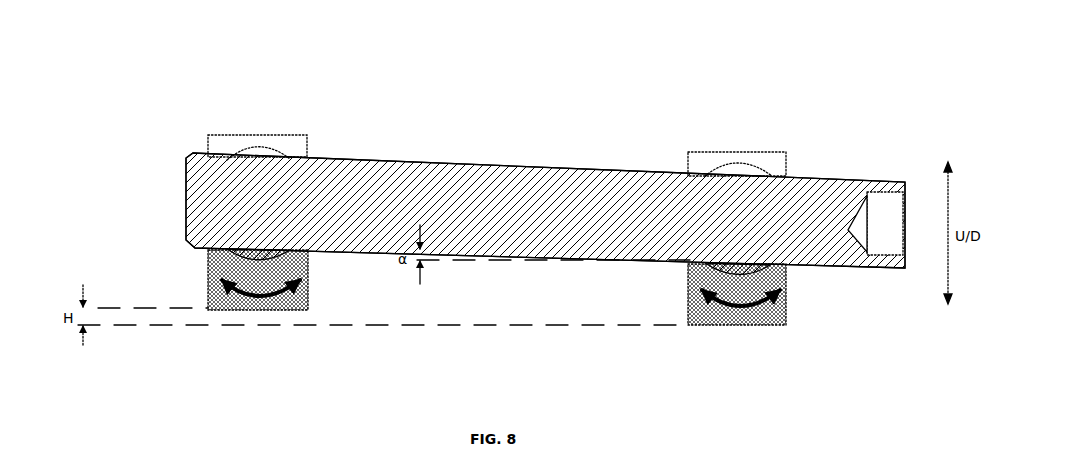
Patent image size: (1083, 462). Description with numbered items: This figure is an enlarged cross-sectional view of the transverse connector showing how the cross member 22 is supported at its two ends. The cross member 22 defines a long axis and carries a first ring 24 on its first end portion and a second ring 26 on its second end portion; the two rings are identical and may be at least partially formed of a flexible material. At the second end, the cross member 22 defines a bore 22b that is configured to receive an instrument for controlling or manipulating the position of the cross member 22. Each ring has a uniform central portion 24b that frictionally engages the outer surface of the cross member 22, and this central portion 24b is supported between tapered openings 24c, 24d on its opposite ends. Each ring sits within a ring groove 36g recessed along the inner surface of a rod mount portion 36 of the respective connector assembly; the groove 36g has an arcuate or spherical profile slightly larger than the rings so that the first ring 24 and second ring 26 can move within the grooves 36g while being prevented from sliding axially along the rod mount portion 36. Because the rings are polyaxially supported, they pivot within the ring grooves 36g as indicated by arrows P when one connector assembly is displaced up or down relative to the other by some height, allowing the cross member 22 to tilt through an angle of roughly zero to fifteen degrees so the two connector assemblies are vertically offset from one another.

The cross member 22 is at (398, 165).
The bore 22b is at (891, 217).
The first ring 24 is at (735, 170).
The uniform central portion 24b is at (262, 158).
The tapered opening 24c is at (291, 158).
The tapered opening 24d is at (233, 158).
The second ring 26 is at (262, 158).
The rod mount portion 36 is at (210, 292).
The ring groove 36g is at (699, 171).
The arrows P is at (250, 296).